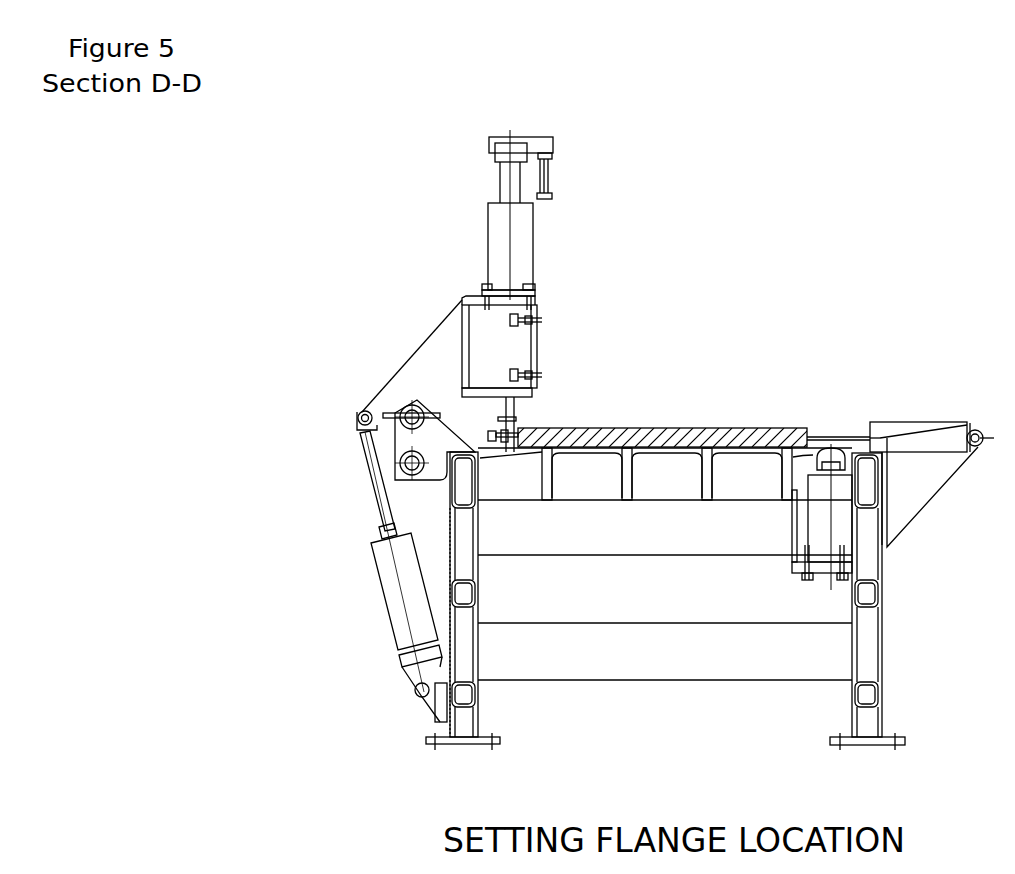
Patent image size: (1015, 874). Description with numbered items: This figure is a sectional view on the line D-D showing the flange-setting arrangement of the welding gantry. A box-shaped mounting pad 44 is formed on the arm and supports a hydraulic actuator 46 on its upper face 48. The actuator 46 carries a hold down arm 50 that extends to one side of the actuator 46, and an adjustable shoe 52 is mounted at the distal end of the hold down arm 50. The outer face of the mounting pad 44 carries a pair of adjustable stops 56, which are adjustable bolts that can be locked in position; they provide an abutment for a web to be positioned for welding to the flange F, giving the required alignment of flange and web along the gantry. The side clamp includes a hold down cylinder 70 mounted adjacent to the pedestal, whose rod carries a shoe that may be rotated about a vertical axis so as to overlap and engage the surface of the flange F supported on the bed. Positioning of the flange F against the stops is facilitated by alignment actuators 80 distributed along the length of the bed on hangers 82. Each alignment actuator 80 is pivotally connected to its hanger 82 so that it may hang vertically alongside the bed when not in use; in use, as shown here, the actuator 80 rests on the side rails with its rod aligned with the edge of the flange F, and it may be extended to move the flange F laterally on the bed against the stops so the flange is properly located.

The mounting pad 44 is at (504, 363).
The hydraulic actuator 46 is at (527, 262).
The upper face 48 is at (472, 300).
The hold down arm 50 is at (500, 137).
The adjustable shoe 52 is at (551, 176).
The adjustable stops 56 is at (542, 375).
The hold down cylinder 70 is at (815, 517).
The alignment actuator 80 is at (913, 422).
The hanger 82 is at (927, 493).
The flange F is at (750, 430).